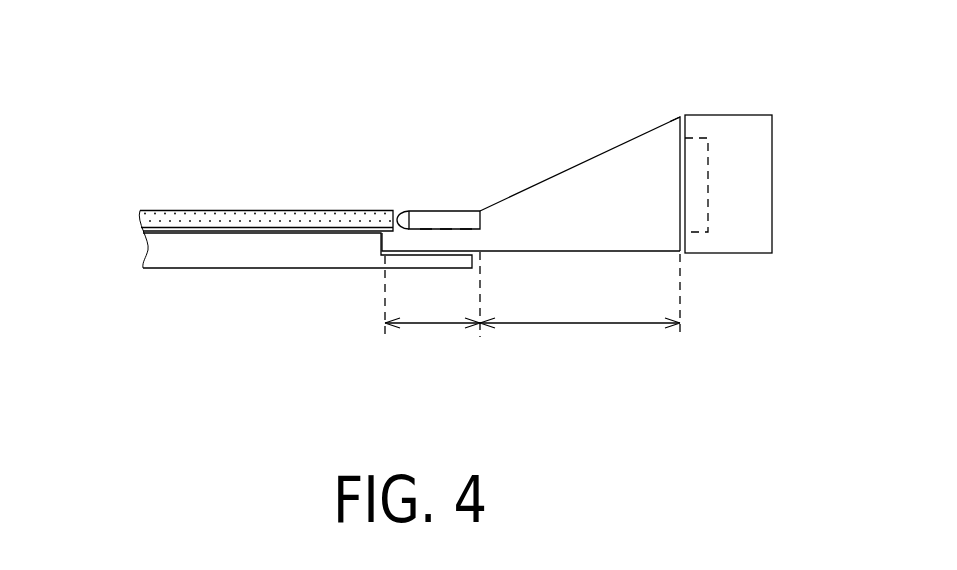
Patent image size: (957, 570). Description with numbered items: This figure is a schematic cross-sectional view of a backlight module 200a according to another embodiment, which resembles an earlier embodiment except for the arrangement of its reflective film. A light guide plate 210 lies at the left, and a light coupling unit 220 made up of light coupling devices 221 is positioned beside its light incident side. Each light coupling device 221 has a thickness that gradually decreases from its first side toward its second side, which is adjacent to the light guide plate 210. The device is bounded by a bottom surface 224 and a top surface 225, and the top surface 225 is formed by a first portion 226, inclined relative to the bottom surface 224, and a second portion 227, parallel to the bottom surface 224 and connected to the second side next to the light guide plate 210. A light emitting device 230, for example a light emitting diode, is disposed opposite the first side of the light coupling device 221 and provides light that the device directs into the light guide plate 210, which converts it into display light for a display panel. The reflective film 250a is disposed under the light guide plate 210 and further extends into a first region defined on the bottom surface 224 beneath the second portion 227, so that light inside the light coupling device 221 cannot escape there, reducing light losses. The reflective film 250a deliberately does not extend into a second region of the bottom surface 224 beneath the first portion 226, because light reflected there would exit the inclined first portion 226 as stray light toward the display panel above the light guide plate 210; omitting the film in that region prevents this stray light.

The backlight module 200a is at (880, 327).
The light guide plate 210 is at (147, 222).
The reflective film 250a is at (195, 258).
The light coupling unit 220 is at (565, 125).
The light coupling device 221 is at (668, 137).
The bottom surface 224 is at (600, 247).
The top surface 225 is at (562, 42).
The first portion 226 is at (525, 190).
The second portion 227 is at (427, 211).
The light emitting device 230 is at (772, 178).